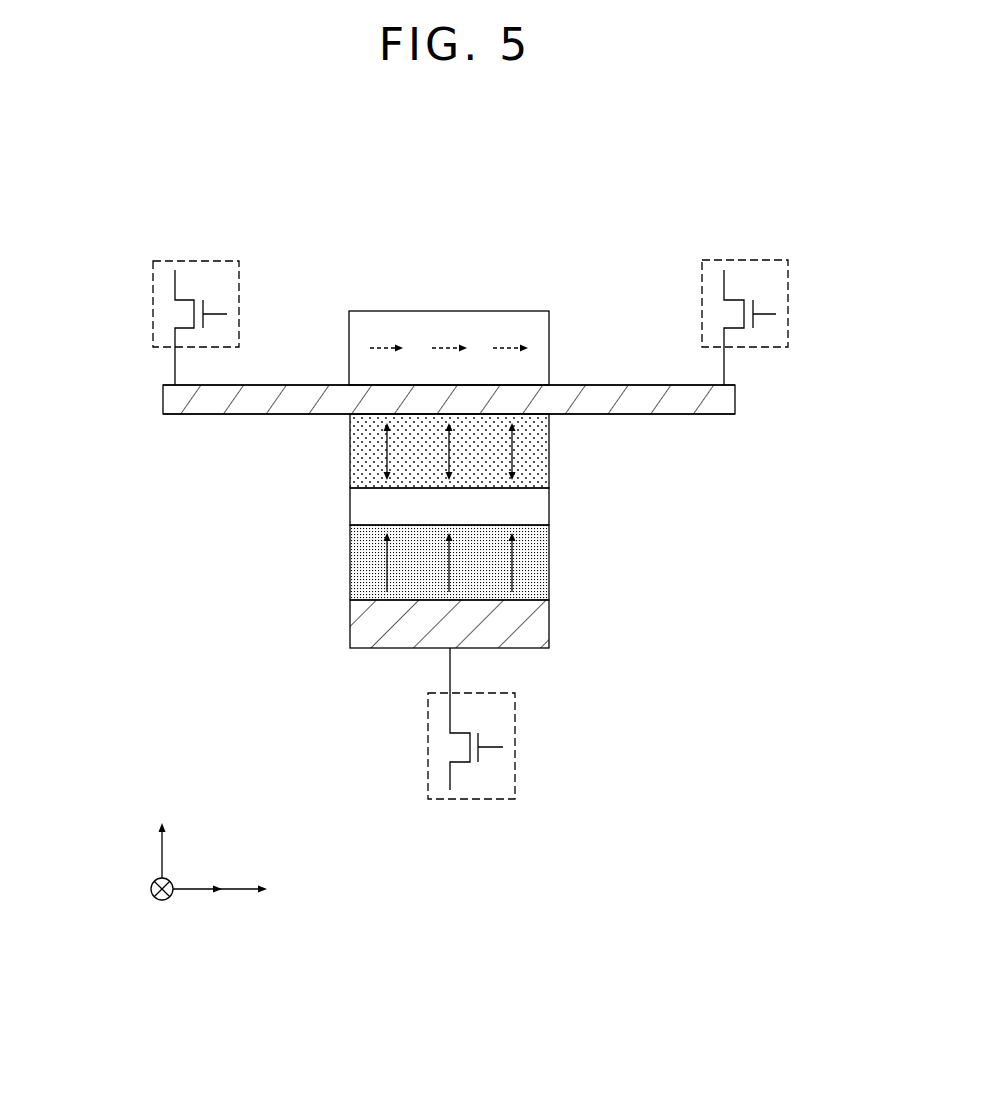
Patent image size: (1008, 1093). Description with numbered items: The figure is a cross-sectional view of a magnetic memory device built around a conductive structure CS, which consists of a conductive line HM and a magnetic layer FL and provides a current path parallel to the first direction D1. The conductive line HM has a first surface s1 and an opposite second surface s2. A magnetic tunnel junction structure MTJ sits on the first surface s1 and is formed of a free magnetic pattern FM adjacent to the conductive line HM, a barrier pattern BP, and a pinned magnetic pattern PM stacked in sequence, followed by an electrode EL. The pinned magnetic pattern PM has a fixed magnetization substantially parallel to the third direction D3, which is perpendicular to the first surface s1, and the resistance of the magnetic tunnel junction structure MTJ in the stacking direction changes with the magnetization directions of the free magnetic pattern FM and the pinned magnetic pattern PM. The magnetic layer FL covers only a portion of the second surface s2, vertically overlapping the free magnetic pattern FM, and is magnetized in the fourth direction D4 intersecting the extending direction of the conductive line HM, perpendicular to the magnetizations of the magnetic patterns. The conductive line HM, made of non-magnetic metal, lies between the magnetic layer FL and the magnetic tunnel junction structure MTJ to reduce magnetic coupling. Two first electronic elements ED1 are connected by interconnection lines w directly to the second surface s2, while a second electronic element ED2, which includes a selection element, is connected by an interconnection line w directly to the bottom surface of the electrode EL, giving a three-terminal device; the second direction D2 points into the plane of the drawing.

The conductive structure CS is at (598, 232).
The magnetic layer FL is at (418, 323).
The conductive line HM is at (580, 398).
The first surface s1 is at (708, 414).
The second surface s2 is at (724, 381).
The magnetic tunnel junction structure MTJ is at (254, 445).
The free magnetic pattern FM is at (352, 452).
The barrier pattern BP is at (362, 508).
The pinned magnetic pattern PM is at (360, 562).
The electrode EL is at (365, 617).
The first electronic element ED1 is at (194, 261).
The second electronic element ED2 is at (428, 738).
The interconnection line w is at (175, 366).
The first direction D1 is at (234, 890).
The second direction D2 is at (162, 904).
The third direction D3 is at (162, 835).
The fourth direction D4 is at (213, 909).